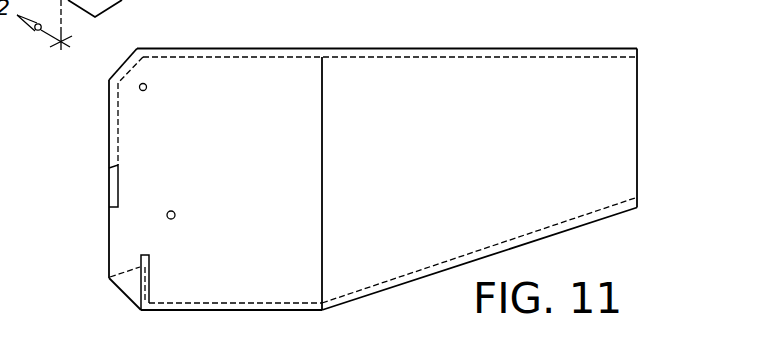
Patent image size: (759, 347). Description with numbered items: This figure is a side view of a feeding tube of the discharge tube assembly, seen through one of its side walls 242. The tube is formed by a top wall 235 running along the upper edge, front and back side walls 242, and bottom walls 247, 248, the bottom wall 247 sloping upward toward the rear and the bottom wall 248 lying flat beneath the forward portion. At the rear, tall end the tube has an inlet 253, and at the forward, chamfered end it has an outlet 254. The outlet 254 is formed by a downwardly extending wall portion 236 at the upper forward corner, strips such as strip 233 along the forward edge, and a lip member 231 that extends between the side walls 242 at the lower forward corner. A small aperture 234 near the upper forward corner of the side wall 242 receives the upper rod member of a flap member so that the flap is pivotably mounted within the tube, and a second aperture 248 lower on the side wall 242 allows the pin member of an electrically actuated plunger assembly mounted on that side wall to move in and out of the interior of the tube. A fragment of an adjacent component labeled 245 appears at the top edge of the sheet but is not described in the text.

The lip member 231 is at (109, 278).
The strip 233 is at (109, 168).
The aperture 234 is at (146, 90).
The top wall 235 is at (417, 48).
The downwardly extending wall portion 236 is at (124, 62).
The side wall 242 is at (265, 200).
The adjacent panel 245 is at (161, 8).
The bottom wall 247 is at (533, 241).
The bottom wall / aperture 248 is at (167, 216).
The inlet 253 is at (637, 115).
The outlet 254 is at (109, 257).